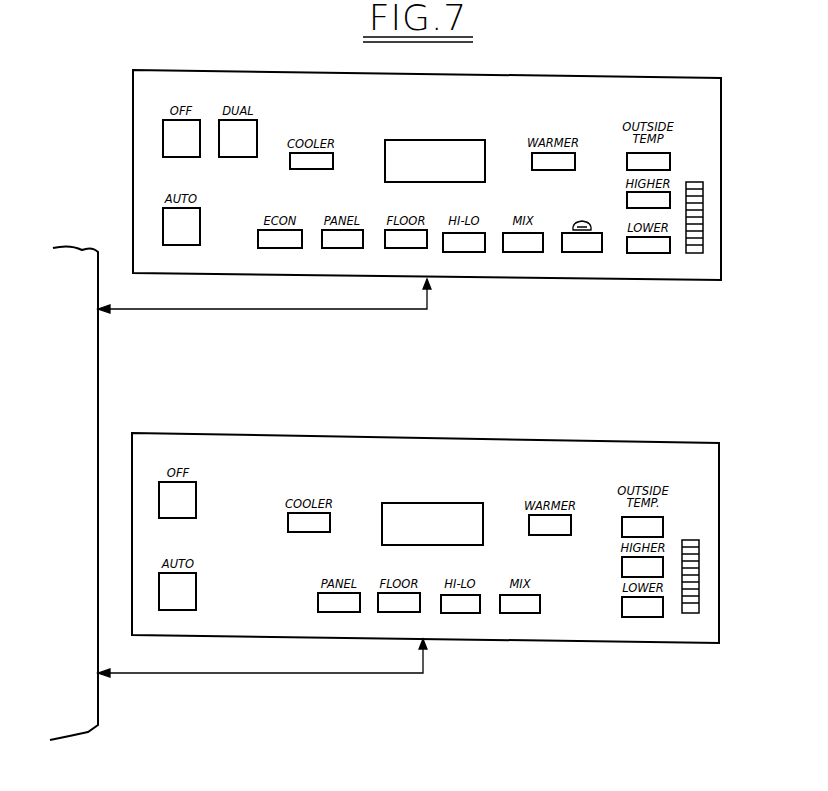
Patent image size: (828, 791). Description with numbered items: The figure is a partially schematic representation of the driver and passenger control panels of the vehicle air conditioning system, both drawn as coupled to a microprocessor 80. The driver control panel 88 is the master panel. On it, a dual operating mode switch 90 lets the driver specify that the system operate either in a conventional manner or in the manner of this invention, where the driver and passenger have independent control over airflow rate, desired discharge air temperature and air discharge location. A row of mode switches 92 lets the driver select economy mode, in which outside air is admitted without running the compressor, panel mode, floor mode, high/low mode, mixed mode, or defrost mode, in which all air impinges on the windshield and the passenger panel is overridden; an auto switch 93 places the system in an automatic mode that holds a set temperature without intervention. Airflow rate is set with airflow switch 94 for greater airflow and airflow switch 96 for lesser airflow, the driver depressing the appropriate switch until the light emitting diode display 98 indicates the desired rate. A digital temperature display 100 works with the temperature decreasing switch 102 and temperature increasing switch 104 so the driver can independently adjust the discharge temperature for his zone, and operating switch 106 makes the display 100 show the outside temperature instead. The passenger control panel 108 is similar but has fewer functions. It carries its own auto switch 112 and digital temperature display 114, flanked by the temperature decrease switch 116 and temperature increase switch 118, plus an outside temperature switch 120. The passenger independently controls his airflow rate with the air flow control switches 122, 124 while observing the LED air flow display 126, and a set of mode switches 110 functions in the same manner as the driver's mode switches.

The microprocessor 80 is at (73, 662).
The driver control panel 88 is at (671, 78).
The dual operating mode switch 90 is at (257, 130).
The mode switches 92 is at (388, 248).
The auto button 93 is at (162, 222).
The airflow switch 94 is at (627, 197).
The airflow switch 96 is at (665, 253).
The light emitting diode display 98 is at (703, 195).
The digital temperature display 100 is at (443, 140).
The temperature decreasing switch 102 is at (333, 160).
The temperature increasing switch 104 is at (532, 160).
The switch 106 is at (670, 158).
The passenger control panel 108 is at (440, 437).
The mode switches 110 is at (340, 612).
The auto button 112 is at (196, 600).
The temperature display 114 is at (425, 503).
The temperature decrease switch 116 is at (288, 522).
The temperature increase switch 118 is at (571, 525).
The outside temperature button 120 is at (663, 520).
The air flow control switch 122 is at (663, 568).
The air flow control switch 124 is at (655, 617).
The LED air flow display 126 is at (699, 570).